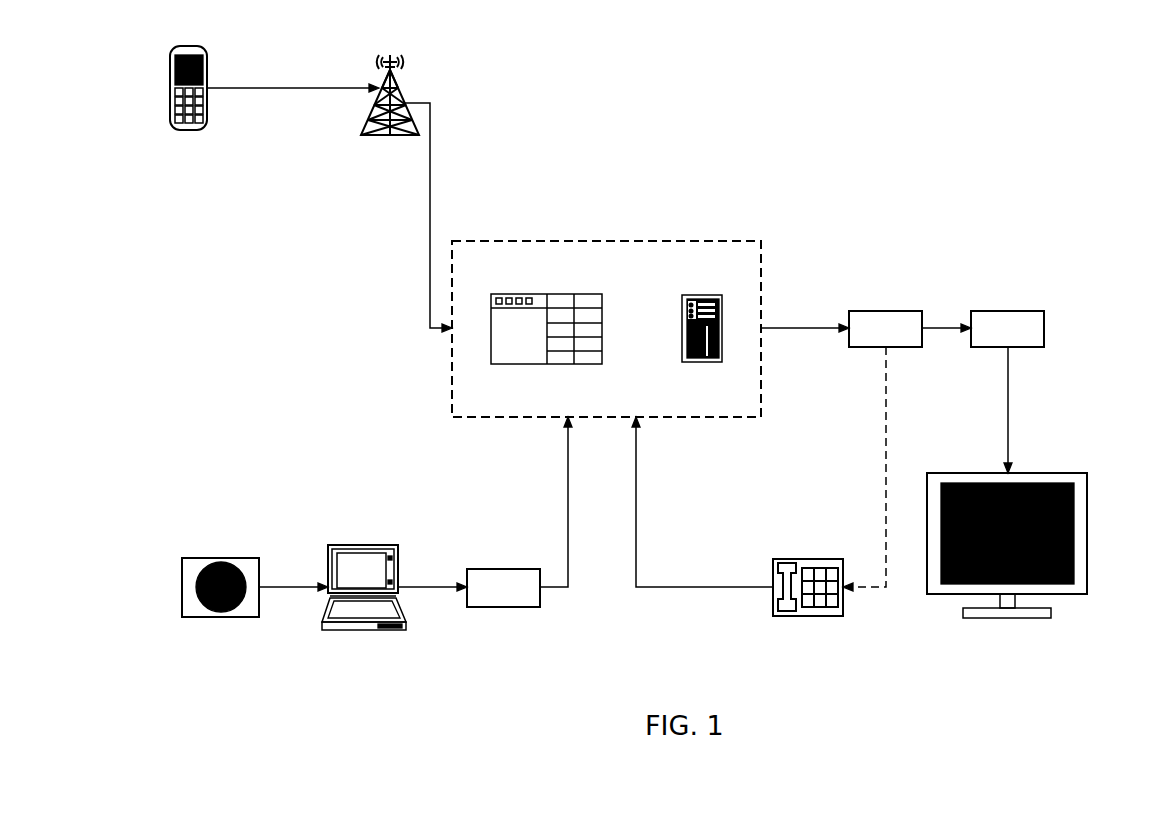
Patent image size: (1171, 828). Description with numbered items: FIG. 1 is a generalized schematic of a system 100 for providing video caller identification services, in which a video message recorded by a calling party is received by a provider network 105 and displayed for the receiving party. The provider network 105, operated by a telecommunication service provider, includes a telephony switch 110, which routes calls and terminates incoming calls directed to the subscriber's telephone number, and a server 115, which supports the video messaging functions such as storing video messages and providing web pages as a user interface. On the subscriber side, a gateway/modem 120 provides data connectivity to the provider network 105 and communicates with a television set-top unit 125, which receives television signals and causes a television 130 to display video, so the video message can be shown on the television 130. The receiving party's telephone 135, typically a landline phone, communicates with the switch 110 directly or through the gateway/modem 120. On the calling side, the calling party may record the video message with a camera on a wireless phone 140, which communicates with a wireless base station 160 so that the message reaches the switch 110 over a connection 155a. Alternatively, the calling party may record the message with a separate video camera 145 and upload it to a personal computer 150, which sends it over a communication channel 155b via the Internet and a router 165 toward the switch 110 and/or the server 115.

The system 100 is at (1041, 686).
The provider network 105 is at (746, 413).
The telephony switch 110 is at (547, 294).
The server 115 is at (703, 295).
The gateway/modem 120 is at (886, 311).
The television set-top unit 125 is at (1008, 311).
The television 130 is at (980, 473).
The telephone 135 is at (808, 559).
The wireless phone 140 is at (190, 130).
The video camera 145 is at (220, 558).
The personal computer 150 is at (363, 545).
The connection 155a is at (430, 220).
The communication channel 155b is at (568, 457).
The wireless base station 160 is at (363, 118).
The router 165 is at (503, 569).